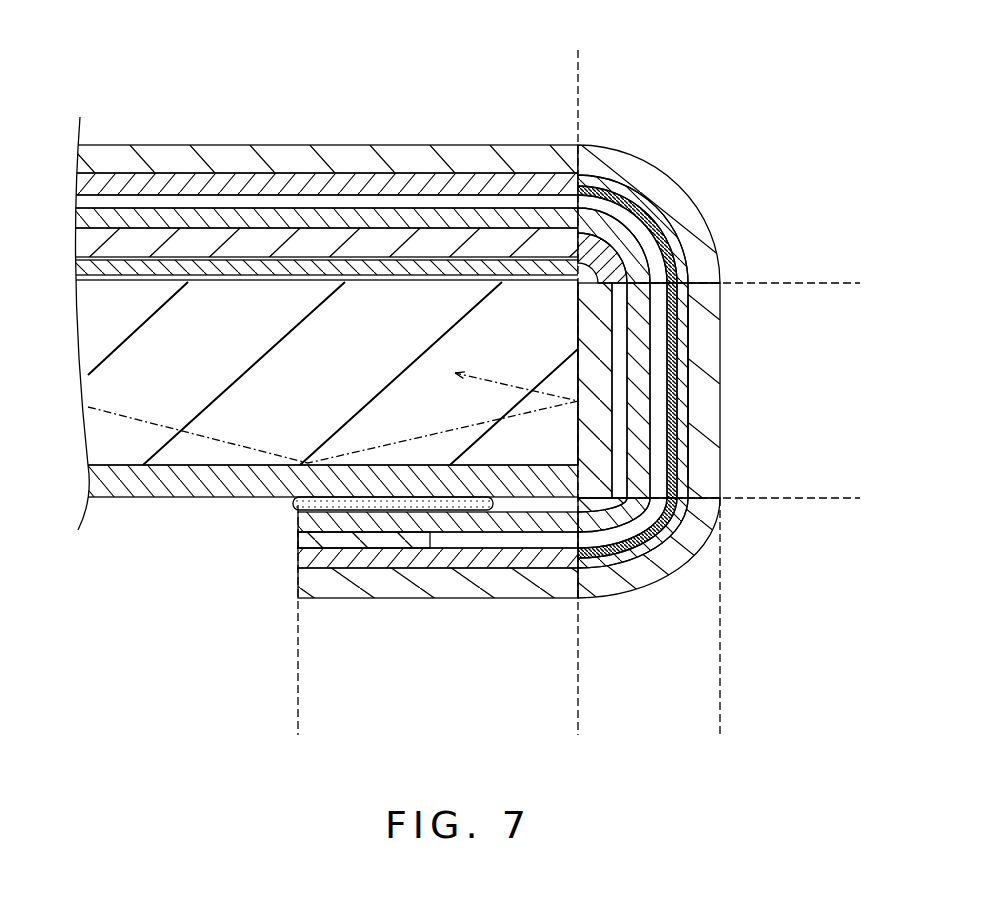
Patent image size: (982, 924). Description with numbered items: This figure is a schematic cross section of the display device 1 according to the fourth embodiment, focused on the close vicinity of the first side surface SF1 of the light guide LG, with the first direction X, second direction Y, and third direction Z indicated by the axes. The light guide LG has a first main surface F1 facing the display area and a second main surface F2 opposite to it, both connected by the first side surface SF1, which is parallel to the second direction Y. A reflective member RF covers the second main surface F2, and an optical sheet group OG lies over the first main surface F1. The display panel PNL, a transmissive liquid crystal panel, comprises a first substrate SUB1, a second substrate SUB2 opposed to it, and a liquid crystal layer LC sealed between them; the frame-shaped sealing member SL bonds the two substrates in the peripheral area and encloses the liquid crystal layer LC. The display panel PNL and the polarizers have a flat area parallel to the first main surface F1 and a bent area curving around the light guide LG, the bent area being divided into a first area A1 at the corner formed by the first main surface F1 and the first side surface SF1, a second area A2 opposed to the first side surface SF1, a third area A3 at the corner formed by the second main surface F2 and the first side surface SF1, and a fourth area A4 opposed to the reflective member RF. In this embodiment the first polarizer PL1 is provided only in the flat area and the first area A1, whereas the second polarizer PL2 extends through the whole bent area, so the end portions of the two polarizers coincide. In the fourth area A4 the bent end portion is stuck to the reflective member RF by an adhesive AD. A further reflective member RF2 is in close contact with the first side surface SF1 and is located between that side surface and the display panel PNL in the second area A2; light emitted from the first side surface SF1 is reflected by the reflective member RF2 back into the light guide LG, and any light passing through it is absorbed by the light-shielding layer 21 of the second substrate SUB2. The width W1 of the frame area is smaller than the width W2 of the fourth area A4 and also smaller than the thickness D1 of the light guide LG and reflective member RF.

The display device 1 is at (110, 59).
The first polarizer PL1 is at (127, 243).
The second polarizer PL2 is at (181, 160).
The first substrate SUB1 is at (273, 220).
The second substrate SUB2 is at (243, 188).
The liquid crystal layer LC is at (252, 202).
The display panel PNL is at (350, 32).
The optical sheet group OG is at (232, 268).
The light guide LG is at (192, 450).
The reflective member RF is at (155, 488).
The reflective member RF2 is at (690, 430).
The adhesive AD is at (294, 505).
The sealing member SL is at (298, 548).
The first side surface SF1 is at (568, 338).
The first main surface F1 is at (368, 297).
The second main surface F2 is at (417, 455).
The light-shielding layer 21 is at (690, 325).
The first area A1 is at (716, 175).
The second area A2 is at (748, 376).
The third area A3 is at (699, 586).
The fourth area A4 is at (459, 632).
The thickness of the light guide and reflective member D1 is at (850, 290).
The width of the frame area W1 is at (712, 722).
The width of the fourth area W2 is at (570, 722).
The first direction X is at (105, 707).
The second direction Y is at (97, 699).
The third direction Z is at (105, 707).